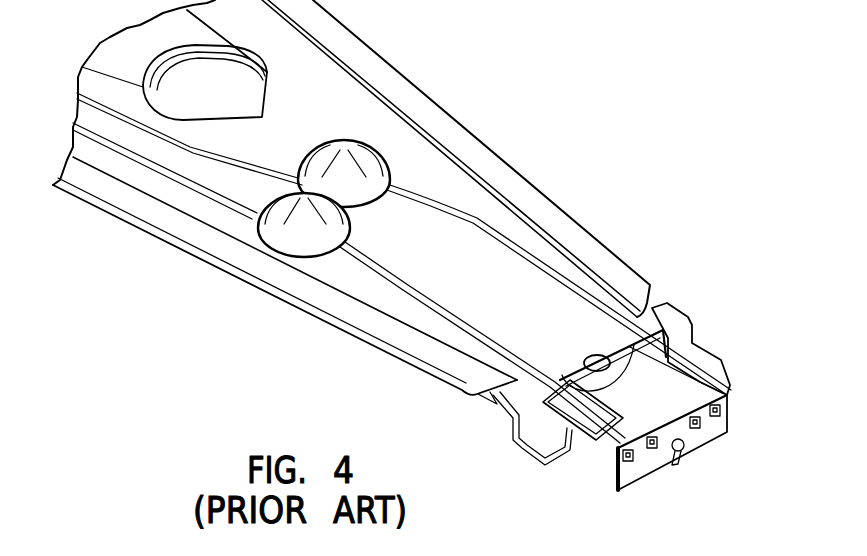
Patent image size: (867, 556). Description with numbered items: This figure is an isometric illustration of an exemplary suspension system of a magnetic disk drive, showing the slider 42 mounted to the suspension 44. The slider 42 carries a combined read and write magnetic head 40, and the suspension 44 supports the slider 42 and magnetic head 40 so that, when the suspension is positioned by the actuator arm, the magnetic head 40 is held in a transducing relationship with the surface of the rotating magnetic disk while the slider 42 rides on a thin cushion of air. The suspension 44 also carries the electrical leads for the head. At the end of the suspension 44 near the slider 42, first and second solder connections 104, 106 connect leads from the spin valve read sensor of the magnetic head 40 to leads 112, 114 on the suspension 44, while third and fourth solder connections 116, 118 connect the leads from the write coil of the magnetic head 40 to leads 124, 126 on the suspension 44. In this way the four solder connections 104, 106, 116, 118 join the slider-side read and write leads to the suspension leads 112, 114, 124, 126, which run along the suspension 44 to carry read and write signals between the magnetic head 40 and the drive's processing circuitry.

The magnetic head 40 is at (683, 467).
The slider 42 is at (552, 482).
The suspension 44 is at (504, 151).
The first solder connection 104 is at (616, 488).
The second solder connection 106 is at (723, 400).
The lead 112 is at (393, 290).
The lead 114 is at (553, 272).
The third solder connection 116 is at (648, 462).
The fourth solder connection 118 is at (693, 422).
The lead 124 is at (397, 286).
The lead 126 is at (477, 228).